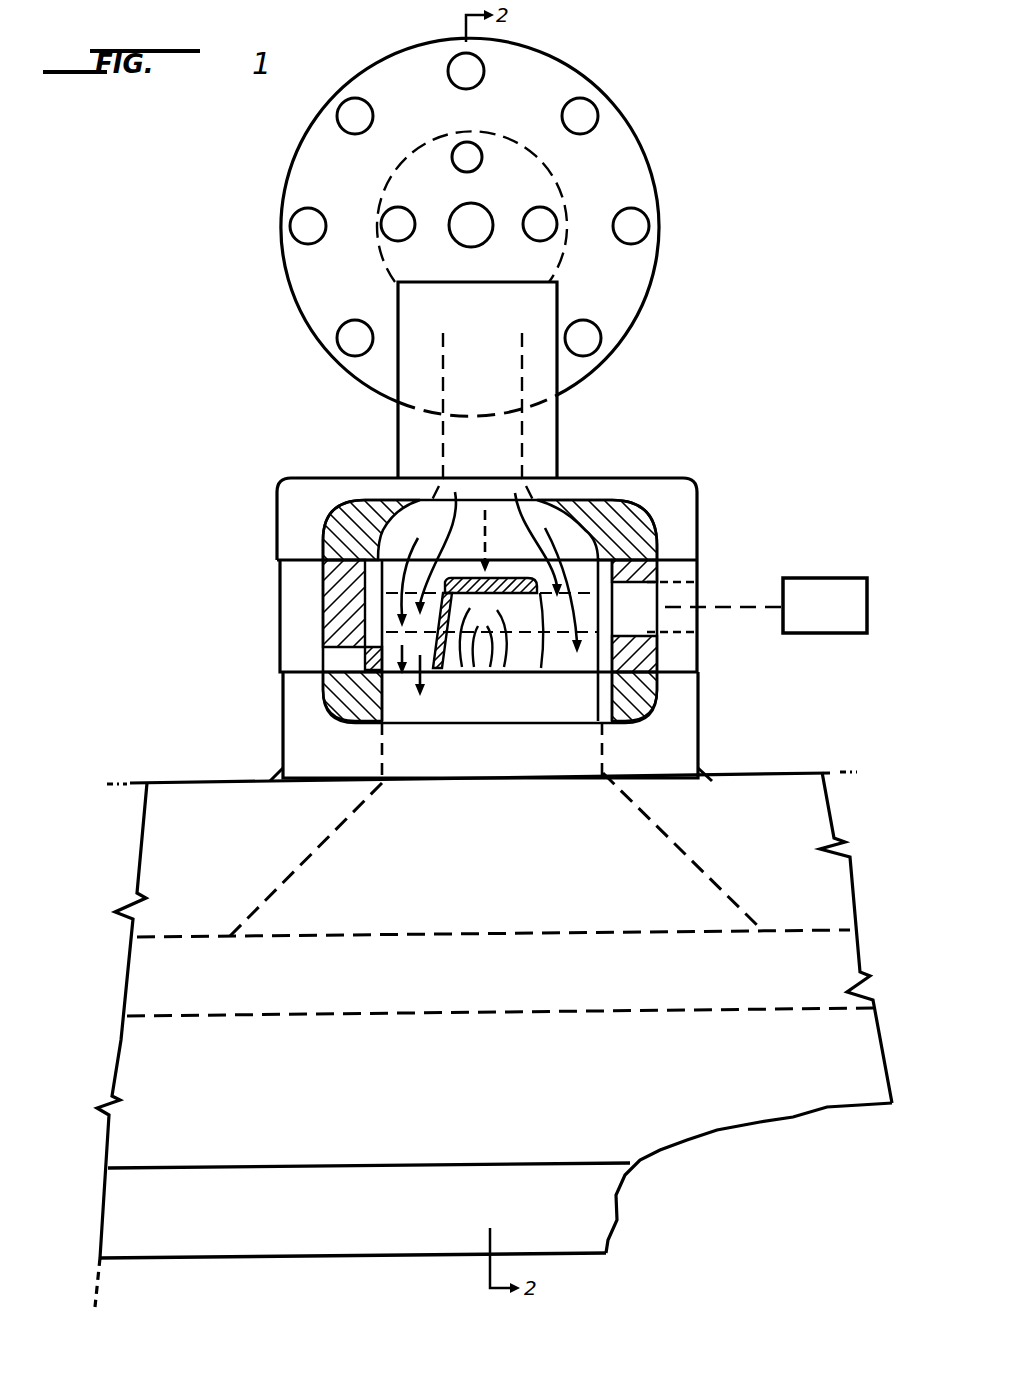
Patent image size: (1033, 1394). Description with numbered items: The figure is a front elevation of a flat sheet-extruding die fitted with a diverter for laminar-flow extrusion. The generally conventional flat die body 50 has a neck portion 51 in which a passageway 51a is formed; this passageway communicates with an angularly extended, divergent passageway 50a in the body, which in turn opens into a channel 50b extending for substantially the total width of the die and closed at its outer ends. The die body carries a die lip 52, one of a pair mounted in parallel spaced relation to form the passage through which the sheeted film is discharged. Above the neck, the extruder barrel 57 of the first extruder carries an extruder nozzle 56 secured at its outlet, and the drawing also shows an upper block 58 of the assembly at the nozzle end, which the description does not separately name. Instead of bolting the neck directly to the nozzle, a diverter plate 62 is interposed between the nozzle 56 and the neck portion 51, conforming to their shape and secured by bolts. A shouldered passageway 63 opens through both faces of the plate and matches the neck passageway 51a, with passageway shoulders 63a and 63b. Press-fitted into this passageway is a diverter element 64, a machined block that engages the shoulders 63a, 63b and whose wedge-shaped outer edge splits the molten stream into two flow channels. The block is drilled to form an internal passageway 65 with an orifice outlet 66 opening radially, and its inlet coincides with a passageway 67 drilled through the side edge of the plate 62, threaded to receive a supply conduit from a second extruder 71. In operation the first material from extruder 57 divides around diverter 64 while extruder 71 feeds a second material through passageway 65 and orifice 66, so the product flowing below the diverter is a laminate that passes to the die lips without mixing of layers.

The flat die body 50 is at (500, 1096).
The divergent passageway 50a is at (690, 868).
The channel 50b is at (205, 918).
The neck portion 51 is at (700, 737).
The passageway 51a is at (386, 708).
The die lip 52 is at (112, 1213).
The extruder nozzle 56 is at (557, 442).
The extruder barrel 57 is at (655, 166).
The upper body block 58 is at (697, 518).
The diverter plate 62 is at (690, 568).
The shouldered passageway 63 is at (365, 615).
The passageway shoulder 63a is at (368, 660).
The passageway shoulder 63b is at (598, 668).
The diverter element 64 is at (489, 594).
The internal passageway 65 is at (485, 623).
The orifice outlet 66 is at (516, 672).
The passageway 67 is at (637, 602).
The second extruder 71 is at (815, 633).